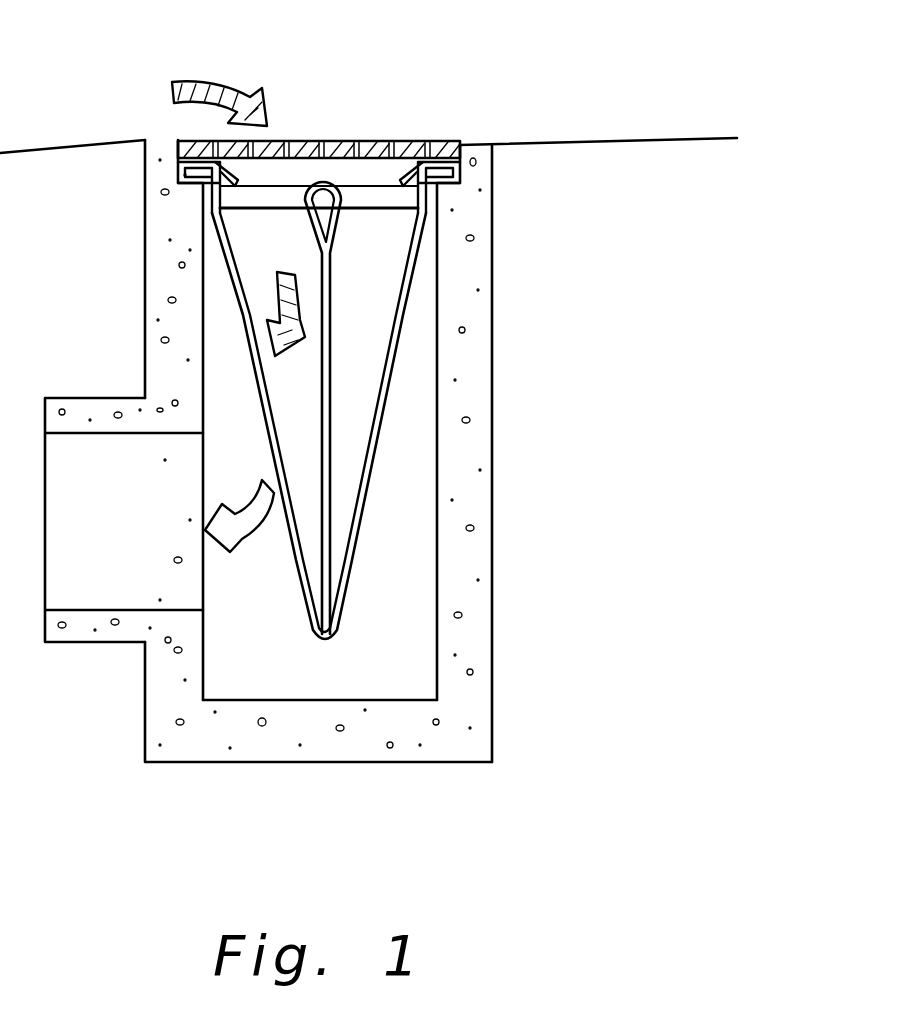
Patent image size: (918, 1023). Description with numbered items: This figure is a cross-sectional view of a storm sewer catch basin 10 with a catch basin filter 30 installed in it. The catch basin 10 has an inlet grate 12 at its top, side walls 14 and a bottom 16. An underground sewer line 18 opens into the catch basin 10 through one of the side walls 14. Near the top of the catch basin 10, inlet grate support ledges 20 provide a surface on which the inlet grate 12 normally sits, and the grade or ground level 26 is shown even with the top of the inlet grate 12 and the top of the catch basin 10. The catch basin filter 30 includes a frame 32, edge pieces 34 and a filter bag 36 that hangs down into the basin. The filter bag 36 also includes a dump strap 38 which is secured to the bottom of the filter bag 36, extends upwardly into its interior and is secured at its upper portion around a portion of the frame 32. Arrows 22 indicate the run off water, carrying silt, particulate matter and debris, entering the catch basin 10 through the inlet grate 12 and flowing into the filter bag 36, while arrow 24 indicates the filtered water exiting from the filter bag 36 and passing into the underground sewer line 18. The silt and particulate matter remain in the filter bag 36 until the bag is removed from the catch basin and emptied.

The storm sewer catch basin 10 is at (368, 424).
The inlet grate 12 is at (340, 141).
The side walls 14 is at (150, 310).
The bottom 16 is at (367, 757).
The underground sewer line 18 is at (90, 642).
The inlet grate support ledges 20 is at (186, 193).
The arrows indicating run off water 22 is at (222, 84).
The arrow indicating filtered water 24 is at (253, 488).
The ground level 26 is at (622, 143).
The catch basin filter 30 is at (386, 460).
The frame 32 is at (374, 198).
The edge pieces 34 is at (188, 166).
The filter bag 36 is at (368, 477).
The dump strap 38 is at (333, 345).